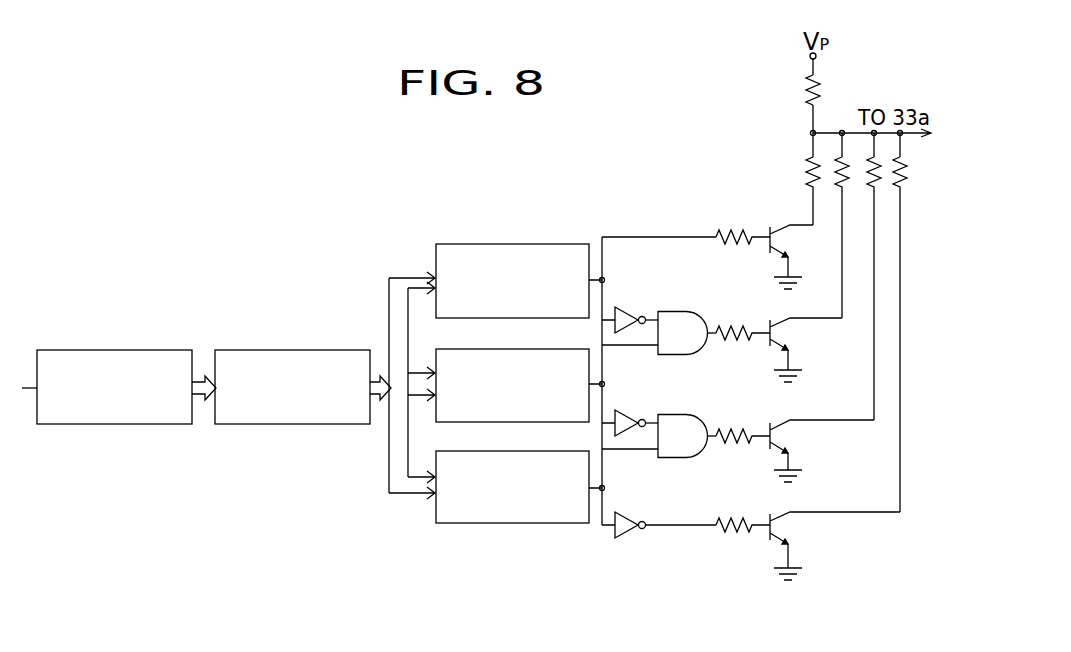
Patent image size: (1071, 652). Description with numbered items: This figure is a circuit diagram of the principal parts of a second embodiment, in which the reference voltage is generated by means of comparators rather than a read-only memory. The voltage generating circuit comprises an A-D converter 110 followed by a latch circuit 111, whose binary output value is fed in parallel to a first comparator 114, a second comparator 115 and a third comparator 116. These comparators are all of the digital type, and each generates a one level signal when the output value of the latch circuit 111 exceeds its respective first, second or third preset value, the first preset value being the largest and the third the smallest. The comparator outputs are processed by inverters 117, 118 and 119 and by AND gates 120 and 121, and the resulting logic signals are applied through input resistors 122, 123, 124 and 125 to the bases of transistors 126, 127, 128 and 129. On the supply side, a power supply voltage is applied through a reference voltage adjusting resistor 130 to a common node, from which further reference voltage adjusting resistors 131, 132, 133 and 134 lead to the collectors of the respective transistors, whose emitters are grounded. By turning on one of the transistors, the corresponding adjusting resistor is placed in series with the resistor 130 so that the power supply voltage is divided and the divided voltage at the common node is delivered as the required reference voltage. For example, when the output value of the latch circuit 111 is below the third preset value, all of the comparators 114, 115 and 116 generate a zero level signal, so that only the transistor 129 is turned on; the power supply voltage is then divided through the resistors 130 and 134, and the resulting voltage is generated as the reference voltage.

The A-D converter 110 is at (128, 348).
The latch circuit 111 is at (265, 348).
The first comparator 114 is at (511, 243).
The second comparator 115 is at (498, 341).
The third comparator 116 is at (501, 443).
The inverter 117 is at (628, 306).
The inverter 118 is at (630, 410).
The inverter 119 is at (630, 508).
The AND gate 120 is at (680, 311).
The AND gate 121 is at (688, 414).
The input resistor 122 is at (726, 228).
The input resistor 123 is at (735, 325).
The input resistor 124 is at (737, 428).
The input resistor 125 is at (735, 535).
The transistor 126 is at (768, 228).
The transistor 127 is at (769, 336).
The transistor 128 is at (770, 443).
The transistor 129 is at (765, 535).
The reference voltage adjusting resistor 130 is at (823, 96).
The reference voltage adjusting resistor 131 is at (810, 173).
The reference voltage adjusting resistor 132 is at (836, 189).
The reference voltage adjusting resistor 133 is at (880, 189).
The reference voltage adjusting resistor 134 is at (906, 185).